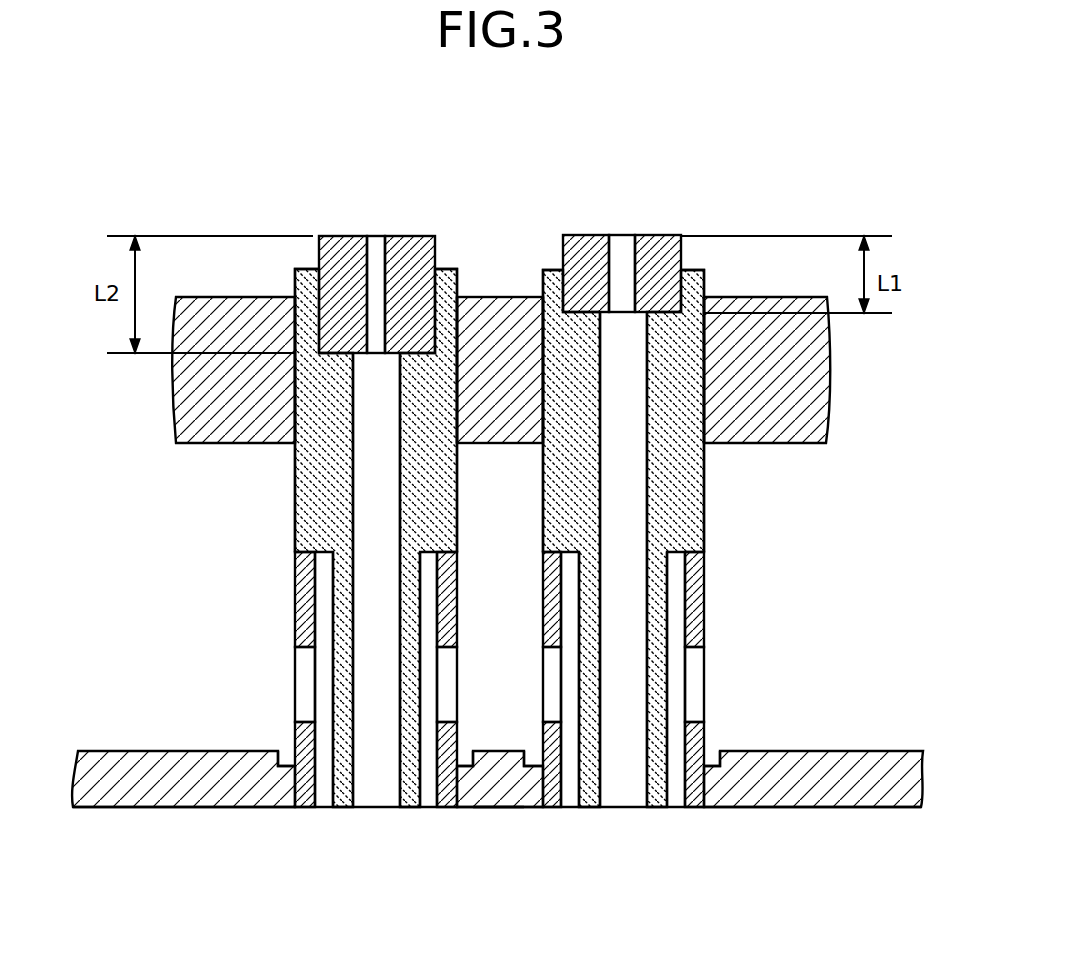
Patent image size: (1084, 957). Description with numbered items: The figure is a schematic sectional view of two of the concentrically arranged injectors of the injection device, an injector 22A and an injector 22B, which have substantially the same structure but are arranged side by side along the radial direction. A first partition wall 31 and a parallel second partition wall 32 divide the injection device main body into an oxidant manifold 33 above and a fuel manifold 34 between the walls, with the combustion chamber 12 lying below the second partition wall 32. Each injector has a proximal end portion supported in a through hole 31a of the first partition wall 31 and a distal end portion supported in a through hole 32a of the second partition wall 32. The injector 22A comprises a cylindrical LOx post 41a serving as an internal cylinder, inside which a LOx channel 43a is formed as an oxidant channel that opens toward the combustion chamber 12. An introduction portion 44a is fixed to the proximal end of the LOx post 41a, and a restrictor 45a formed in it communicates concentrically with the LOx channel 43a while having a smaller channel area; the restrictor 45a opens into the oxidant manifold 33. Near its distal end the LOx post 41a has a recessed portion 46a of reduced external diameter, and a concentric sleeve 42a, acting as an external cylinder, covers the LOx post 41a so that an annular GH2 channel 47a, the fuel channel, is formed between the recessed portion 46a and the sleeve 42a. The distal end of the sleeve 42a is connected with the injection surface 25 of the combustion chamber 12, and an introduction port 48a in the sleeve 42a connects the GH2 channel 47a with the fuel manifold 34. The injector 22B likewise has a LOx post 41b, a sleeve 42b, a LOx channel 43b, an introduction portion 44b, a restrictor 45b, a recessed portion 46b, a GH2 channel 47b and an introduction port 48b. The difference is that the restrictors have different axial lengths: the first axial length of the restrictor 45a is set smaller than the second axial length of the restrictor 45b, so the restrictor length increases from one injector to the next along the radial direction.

The combustion chamber 12 is at (511, 949).
The injector 22A is at (714, 515).
The injector 22B is at (285, 513).
The injection surface 25 is at (502, 808).
The first partition wall 31 is at (810, 355).
The through hole 31a is at (295, 342).
The second partition wall 32 is at (833, 790).
The through hole 32a is at (284, 795).
The oxidant manifold 33 is at (486, 147).
The fuel manifold 34 is at (871, 597).
The LOx post 41a is at (680, 400).
The LOx post 41b is at (315, 400).
The sleeve 42a is at (704, 598).
The sleeve 42b is at (295, 598).
The LOx channel 43a is at (625, 752).
The LOx channel 43b is at (377, 755).
The introduction portion 44a is at (585, 246).
The introduction portion 44b is at (342, 248).
The restrictor 45a is at (622, 246).
The restrictor 45b is at (378, 248).
The recessed portion 46a is at (673, 678).
The recessed portion 46b is at (325, 678).
The GH2 channel 47a is at (677, 790).
The GH2 channel 47b is at (430, 790).
The introduction port 48a is at (693, 662).
The introduction port 48b is at (307, 662).